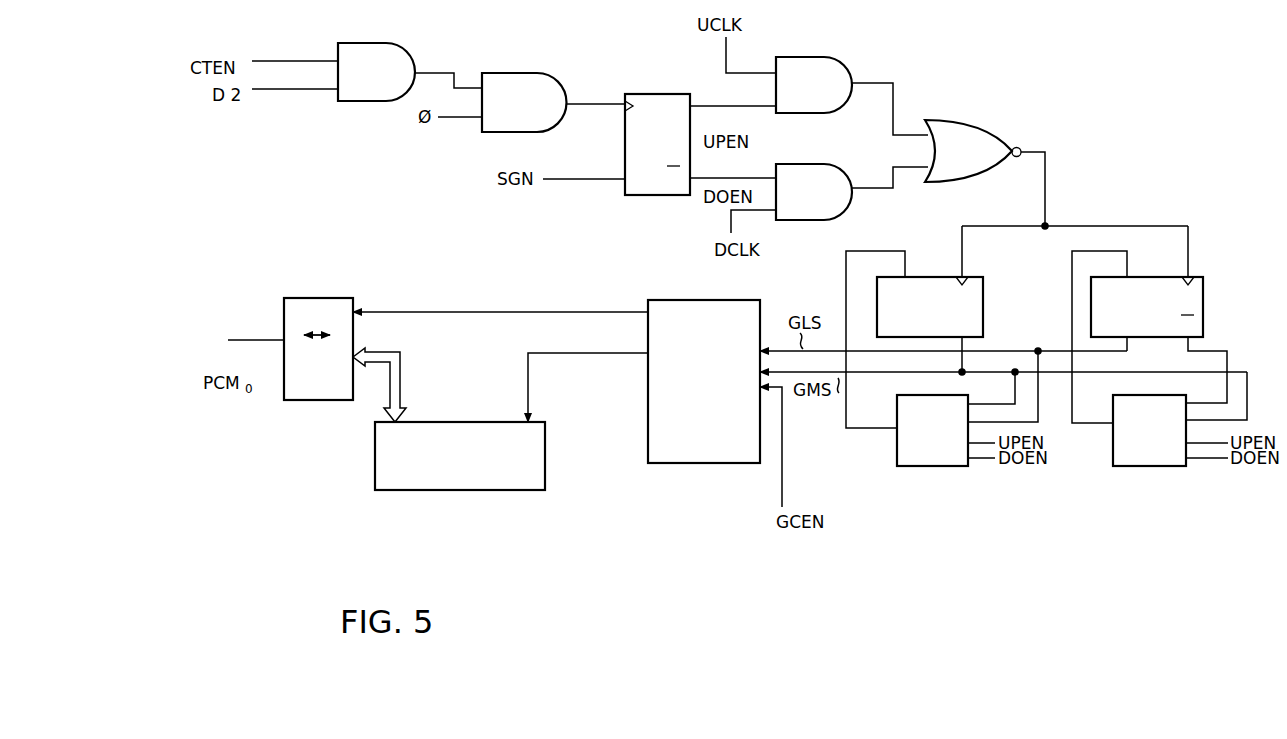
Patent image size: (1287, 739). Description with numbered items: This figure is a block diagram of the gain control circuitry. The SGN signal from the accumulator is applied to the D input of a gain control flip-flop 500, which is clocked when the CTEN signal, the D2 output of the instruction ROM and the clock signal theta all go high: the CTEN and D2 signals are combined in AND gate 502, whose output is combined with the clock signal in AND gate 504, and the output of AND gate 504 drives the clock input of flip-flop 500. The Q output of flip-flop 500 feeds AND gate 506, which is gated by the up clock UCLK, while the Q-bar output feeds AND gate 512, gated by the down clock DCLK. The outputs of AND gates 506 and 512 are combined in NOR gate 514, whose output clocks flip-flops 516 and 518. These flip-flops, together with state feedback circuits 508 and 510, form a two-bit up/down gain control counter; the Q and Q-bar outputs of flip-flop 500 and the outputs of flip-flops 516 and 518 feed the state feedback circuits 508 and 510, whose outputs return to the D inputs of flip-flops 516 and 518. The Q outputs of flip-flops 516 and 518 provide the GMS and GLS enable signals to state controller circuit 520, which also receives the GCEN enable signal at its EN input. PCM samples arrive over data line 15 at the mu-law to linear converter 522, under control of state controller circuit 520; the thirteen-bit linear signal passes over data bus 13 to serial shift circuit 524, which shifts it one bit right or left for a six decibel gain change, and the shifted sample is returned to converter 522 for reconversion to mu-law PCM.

The unidirectional data line 13 is at (377, 383).
The unidirectional data line 15 is at (253, 340).
The gain control flip-flop 500 is at (643, 92).
The AND gate 502 is at (410, 53).
The AND gate 504 is at (542, 72).
The AND gate 506 is at (827, 53).
The state feedback circuit 508 is at (958, 468).
The state feedback circuit 510 is at (1170, 468).
The AND gate 512 is at (833, 217).
The NOR gate 514 is at (962, 120).
The flip-flop 516 is at (985, 322).
The flip-flop 518 is at (1205, 322).
The state controller circuit 520 is at (748, 465).
The mu-law to linear converter 522 is at (335, 297).
The serial shift circuit 524 is at (550, 492).